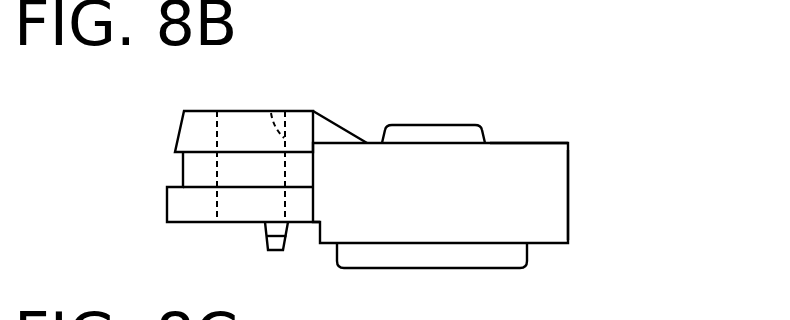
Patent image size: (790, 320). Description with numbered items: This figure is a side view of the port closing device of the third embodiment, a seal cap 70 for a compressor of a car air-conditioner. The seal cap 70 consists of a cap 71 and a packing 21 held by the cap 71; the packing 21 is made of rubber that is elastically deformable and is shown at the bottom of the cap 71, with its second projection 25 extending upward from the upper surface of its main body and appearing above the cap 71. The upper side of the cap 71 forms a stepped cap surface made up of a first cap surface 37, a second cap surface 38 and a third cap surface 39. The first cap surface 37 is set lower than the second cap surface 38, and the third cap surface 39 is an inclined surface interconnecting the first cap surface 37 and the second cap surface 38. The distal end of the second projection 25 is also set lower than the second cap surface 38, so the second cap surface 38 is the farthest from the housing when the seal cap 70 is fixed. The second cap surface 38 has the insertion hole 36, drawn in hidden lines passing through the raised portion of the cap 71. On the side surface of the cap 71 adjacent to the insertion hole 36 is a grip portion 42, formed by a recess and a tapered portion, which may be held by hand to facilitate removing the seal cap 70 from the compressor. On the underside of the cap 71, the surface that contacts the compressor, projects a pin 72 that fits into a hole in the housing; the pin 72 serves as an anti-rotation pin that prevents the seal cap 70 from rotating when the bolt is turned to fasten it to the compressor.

The seal cap 70 is at (590, 154).
The cap 71 is at (574, 192).
The first cap surface 37 is at (518, 143).
The second projection 25 is at (462, 125).
The second cap surface 38 is at (195, 110).
The third cap surface 39 is at (340, 122).
The grip portion 42 is at (182, 133).
The insertion hole 36 is at (272, 110).
The pin 72 is at (262, 242).
The packing 21 is at (524, 272).